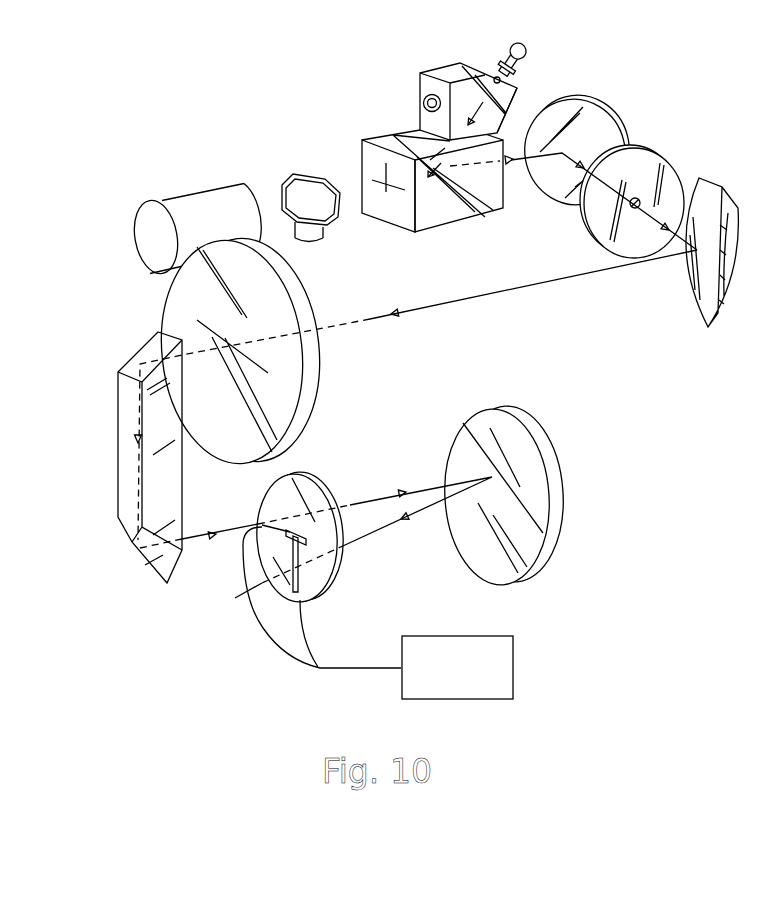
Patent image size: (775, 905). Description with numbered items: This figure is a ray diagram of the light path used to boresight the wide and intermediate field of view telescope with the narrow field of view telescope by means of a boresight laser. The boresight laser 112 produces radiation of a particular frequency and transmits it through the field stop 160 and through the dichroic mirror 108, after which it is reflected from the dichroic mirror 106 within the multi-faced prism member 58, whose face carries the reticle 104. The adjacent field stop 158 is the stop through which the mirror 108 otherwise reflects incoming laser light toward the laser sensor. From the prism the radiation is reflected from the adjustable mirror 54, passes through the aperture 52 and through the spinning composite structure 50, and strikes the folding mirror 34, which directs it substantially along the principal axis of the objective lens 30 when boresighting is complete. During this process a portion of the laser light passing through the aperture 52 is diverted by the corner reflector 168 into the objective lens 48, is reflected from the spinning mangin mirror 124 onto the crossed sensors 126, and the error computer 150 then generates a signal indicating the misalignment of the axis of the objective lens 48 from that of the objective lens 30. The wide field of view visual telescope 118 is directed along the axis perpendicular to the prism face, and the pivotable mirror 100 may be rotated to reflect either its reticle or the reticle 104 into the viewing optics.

The objective lens 30 is at (317, 388).
The folding mirror 34 is at (694, 252).
The objective lens 48 is at (340, 580).
The composite structure 50 is at (665, 150).
The aperture 52 is at (635, 209).
The adjustable mirror 54 is at (621, 121).
The multi-faced prism member 58 is at (436, 219).
The mirror 100 is at (310, 175).
The reticle 104 is at (387, 200).
The dichroic mirror 106 is at (473, 213).
The dichroic mirror 108 is at (505, 115).
The boresight laser 112 is at (528, 60).
The wide field of view visual telescope 118 is at (181, 202).
The spinning mangin mirror 124 is at (557, 523).
The crossed sensors 126 is at (305, 600).
The error computer 150 is at (449, 640).
The field stop 158 is at (421, 100).
The field stop 160 is at (497, 76).
The corner reflector 168 is at (118, 435).